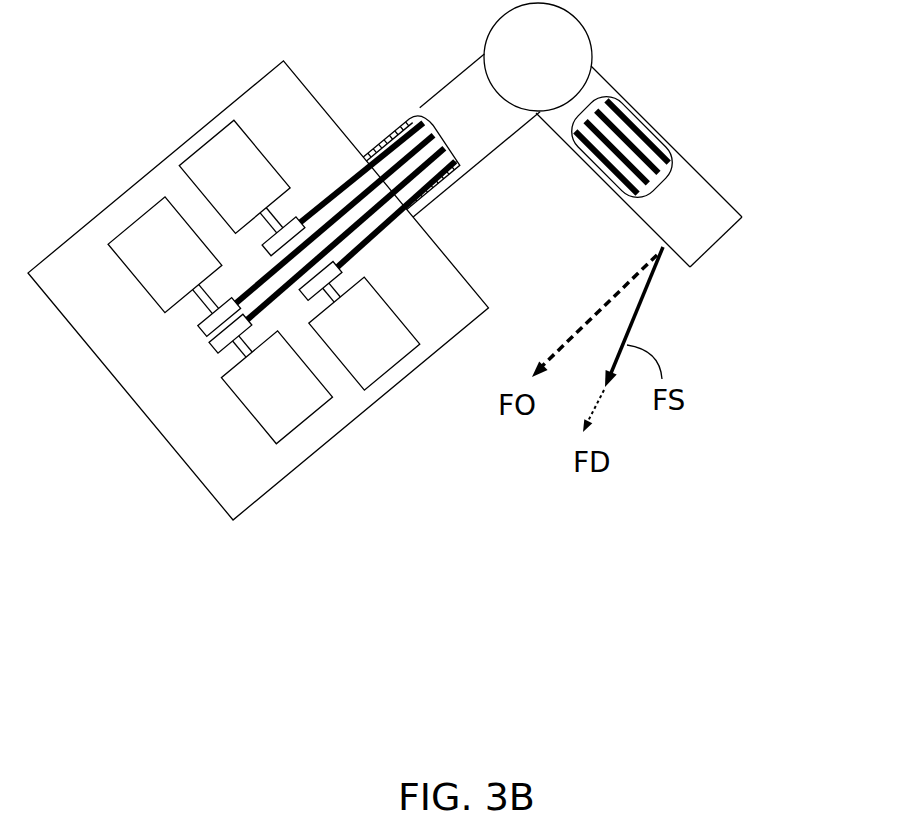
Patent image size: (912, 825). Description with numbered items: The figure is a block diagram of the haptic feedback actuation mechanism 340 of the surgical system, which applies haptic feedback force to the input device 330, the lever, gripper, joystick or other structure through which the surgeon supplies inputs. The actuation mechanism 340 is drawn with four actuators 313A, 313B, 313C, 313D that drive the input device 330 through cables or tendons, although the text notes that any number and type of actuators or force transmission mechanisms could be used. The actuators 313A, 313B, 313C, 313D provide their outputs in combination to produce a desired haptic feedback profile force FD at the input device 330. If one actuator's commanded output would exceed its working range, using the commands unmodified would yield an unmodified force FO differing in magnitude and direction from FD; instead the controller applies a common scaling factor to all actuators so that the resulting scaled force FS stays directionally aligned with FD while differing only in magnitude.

The haptic feedback actuation mechanism 340 is at (148, 167).
The first sensing element 313A is at (252, 136).
The second sensing element 313B is at (153, 300).
The third sensing element 313C is at (410, 331).
The fourth sensing element 313D is at (296, 428).
The input device 330 is at (721, 196).